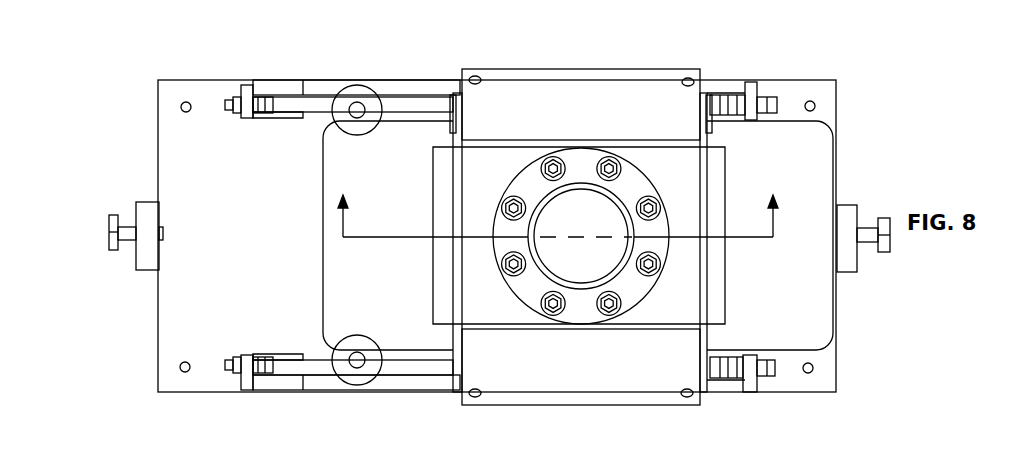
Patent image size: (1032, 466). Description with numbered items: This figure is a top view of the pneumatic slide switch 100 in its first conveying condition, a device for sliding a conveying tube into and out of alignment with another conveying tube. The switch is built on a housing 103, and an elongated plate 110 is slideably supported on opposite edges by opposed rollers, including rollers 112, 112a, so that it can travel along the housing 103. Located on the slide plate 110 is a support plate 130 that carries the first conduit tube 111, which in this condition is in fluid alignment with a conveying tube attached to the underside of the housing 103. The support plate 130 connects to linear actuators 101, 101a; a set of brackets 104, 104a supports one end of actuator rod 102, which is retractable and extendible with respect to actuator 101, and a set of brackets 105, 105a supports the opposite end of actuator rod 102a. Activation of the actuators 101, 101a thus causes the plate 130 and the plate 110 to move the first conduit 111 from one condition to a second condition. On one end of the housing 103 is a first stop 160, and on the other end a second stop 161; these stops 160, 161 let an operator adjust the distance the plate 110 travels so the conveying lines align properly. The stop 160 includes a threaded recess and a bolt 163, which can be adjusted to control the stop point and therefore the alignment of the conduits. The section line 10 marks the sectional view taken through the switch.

The slide switch 100 is at (741, 28).
The linear actuator 101 is at (655, 395).
The linear actuator 101a is at (641, 70).
The actuator rod 102 is at (396, 375).
The actuator rod 102a is at (417, 95).
The housing 103 is at (830, 373).
The bracket 104 is at (245, 390).
The bracket 104a is at (247, 86).
The bracket 105 is at (752, 388).
The bracket 105a is at (752, 84).
The elongated plate 110 is at (824, 307).
The first conduit tube 111 is at (585, 185).
The roller 112 is at (347, 380).
The roller 112a is at (353, 86).
The support plate 130 is at (718, 197).
The first stop 160 is at (148, 202).
The second stop 161 is at (848, 205).
The bolt 163 is at (113, 252).
The section line 10 is at (561, 231).